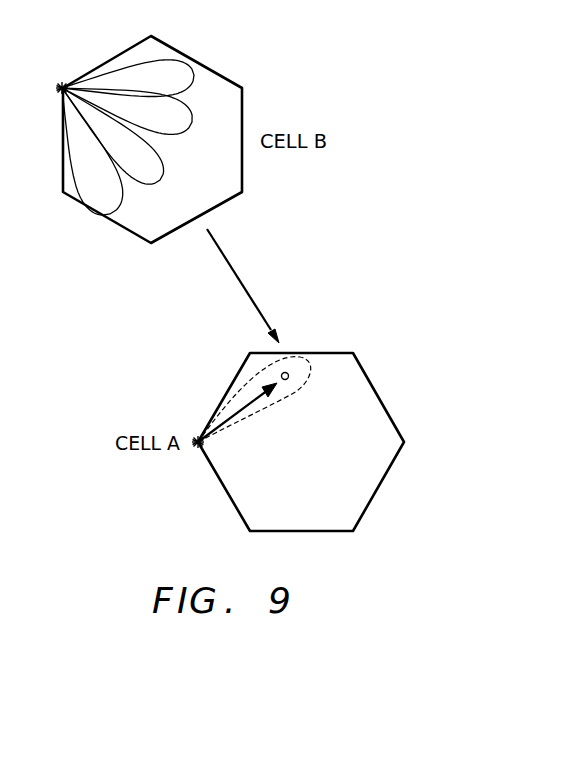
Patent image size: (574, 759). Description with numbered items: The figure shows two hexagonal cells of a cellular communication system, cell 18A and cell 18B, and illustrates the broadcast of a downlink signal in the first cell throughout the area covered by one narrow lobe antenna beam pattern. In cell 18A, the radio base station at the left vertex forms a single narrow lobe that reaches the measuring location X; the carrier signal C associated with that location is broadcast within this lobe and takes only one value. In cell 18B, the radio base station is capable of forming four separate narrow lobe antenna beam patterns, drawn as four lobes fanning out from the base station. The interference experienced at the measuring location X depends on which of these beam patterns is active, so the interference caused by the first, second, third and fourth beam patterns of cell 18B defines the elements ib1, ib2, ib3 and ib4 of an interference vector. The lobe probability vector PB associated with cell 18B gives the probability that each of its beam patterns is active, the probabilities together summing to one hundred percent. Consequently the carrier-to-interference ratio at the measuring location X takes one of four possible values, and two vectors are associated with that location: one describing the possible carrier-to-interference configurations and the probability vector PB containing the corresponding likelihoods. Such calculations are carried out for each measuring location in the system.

The cell 18B is at (194, 60).
The cell 18A is at (318, 352).
The probability vector PB is at (166, 91).
The interference vector element ib4 is at (143, 83).
The interference vector element ib3 is at (143, 118).
The interference vector element ib2 is at (129, 137).
The interference vector element ib1 is at (108, 157).
The carrier signal C is at (254, 400).
The measuring location X is at (305, 371).